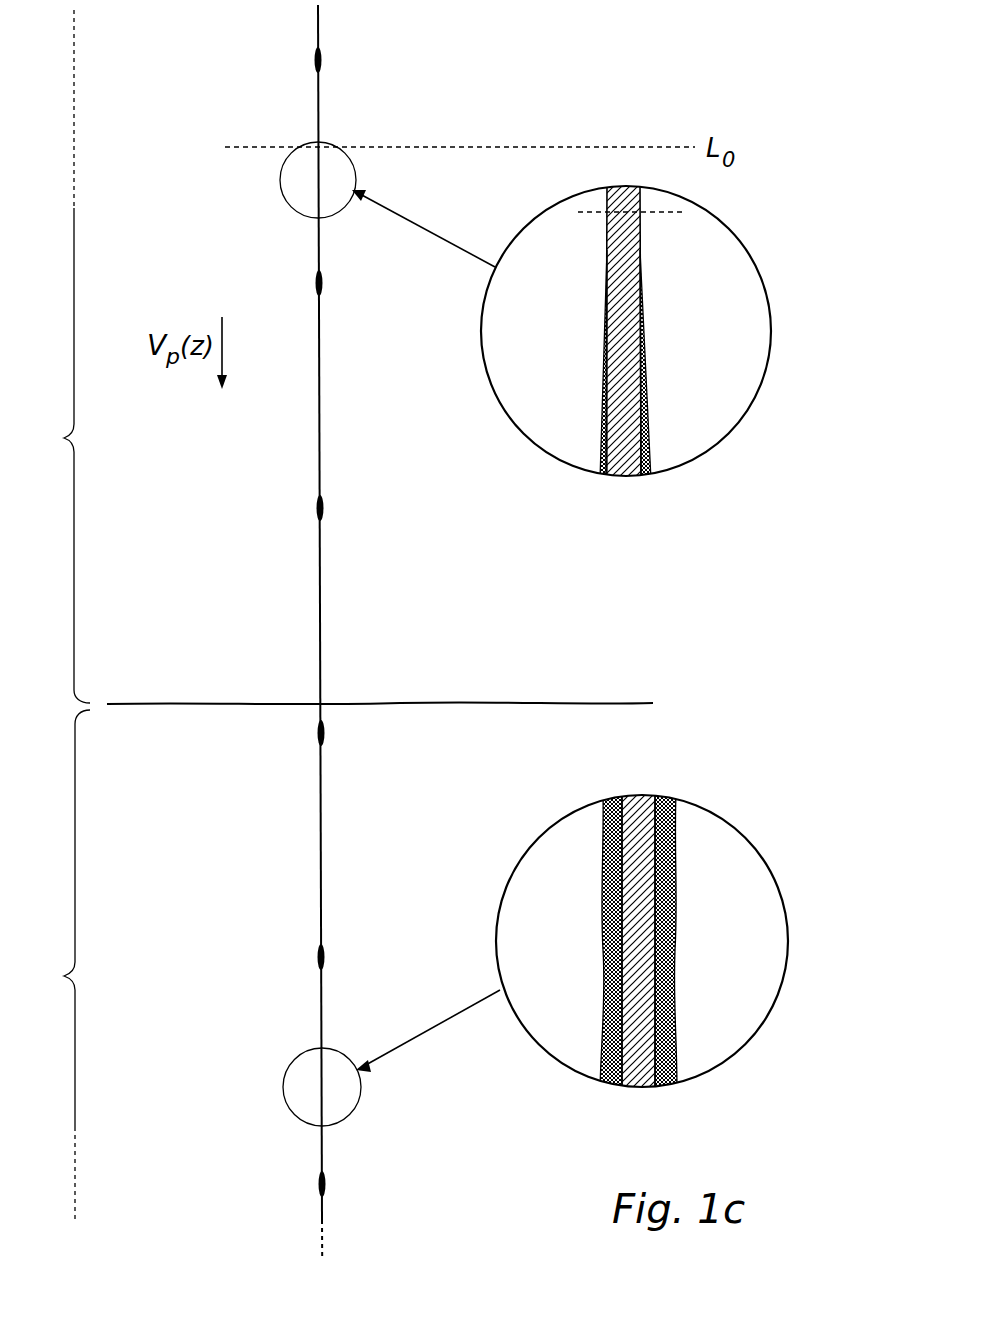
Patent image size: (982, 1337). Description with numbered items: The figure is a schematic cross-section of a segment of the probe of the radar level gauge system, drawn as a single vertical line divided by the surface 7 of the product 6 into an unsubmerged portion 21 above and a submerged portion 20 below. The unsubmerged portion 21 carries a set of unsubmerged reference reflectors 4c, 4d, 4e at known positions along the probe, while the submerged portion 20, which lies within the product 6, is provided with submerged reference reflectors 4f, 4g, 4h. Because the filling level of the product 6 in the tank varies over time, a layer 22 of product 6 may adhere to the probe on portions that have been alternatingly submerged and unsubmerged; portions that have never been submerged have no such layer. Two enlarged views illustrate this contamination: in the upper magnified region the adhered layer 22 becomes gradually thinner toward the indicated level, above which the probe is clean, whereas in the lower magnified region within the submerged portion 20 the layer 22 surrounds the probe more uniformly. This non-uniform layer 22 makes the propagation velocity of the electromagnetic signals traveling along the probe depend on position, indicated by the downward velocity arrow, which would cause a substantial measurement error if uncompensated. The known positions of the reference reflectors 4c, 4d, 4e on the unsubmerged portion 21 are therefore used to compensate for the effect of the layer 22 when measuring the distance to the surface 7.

The reference reflector 4c is at (322, 62).
The reference reflector 4d is at (323, 288).
The reference reflector 4e is at (324, 513).
The submerged reference reflector 4f is at (325, 740).
The submerged reference reflector 4g is at (325, 965).
The submerged reference reflector 4h is at (326, 1190).
The surface 7 is at (537, 702).
The unsubmerged portion 21 is at (59, 356).
The submerged portion 20 is at (60, 966).
The product 6 is at (206, 942).
The layer 22 is at (647, 320).